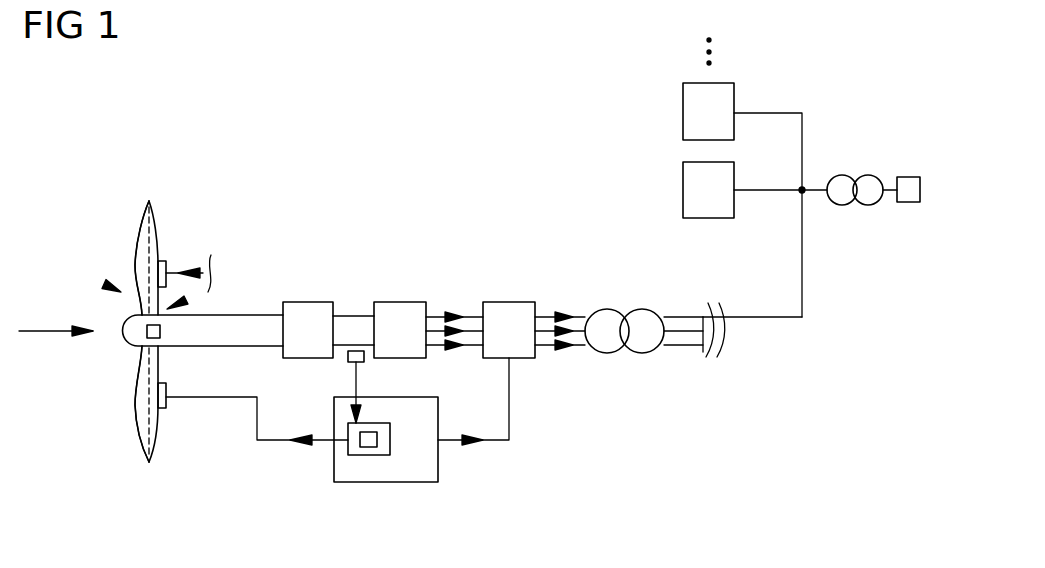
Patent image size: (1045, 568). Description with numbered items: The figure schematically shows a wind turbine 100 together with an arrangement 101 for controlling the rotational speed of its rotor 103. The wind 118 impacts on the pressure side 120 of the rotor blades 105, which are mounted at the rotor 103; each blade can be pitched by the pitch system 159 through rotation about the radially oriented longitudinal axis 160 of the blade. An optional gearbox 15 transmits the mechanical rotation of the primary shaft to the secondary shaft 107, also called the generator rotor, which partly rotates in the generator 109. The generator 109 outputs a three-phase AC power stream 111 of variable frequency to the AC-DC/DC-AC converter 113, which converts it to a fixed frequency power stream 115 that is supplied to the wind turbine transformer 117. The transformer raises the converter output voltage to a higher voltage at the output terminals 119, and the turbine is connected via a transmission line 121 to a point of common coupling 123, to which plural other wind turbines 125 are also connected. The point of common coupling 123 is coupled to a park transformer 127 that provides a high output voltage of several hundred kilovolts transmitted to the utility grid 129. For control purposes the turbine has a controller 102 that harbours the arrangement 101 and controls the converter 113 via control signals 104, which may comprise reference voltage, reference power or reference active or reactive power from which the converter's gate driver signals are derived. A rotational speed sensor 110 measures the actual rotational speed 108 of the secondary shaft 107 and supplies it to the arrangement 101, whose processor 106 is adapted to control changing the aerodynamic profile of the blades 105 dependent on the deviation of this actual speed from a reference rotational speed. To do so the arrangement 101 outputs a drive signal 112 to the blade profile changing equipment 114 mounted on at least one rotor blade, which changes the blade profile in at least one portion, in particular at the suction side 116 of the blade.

The wind turbine 100 is at (866, 64).
The longitudinal axis of the rotor blade 160 is at (148, 193).
The rotor blades 105 is at (136, 245).
The rotor 103 is at (277, 315).
The pitch system 159 is at (160, 333).
The blade profile changing equipment 114 is at (163, 260).
The drive signal 112 is at (178, 265).
The suction side 116 is at (186, 300).
The pressure side 120 is at (102, 285).
The wind 118 is at (50, 333).
The gearbox 15 is at (307, 302).
The secondary shaft 107 is at (353, 316).
The generator 109 is at (400, 302).
The AC power stream 111 is at (443, 310).
The AC-DC/DC-AC converter 113 is at (508, 302).
The fixed frequency power stream 115 is at (555, 313).
The wind turbine transformer 117 is at (640, 309).
The output terminals 119 is at (665, 348).
The transmission line 121 is at (777, 320).
The point of common coupling 123 is at (802, 190).
The other wind turbines 125 is at (683, 117).
The park transformer 127 is at (860, 176).
The utility grid 129 is at (910, 202).
The rotational speed sensor 110 is at (347, 363).
The controller 102 is at (425, 472).
The arrangement for controlling a rotational speed 101 is at (357, 453).
The processor 106 is at (377, 448).
The actual rotational speed 108 is at (360, 422).
The control signals 104 is at (485, 442).